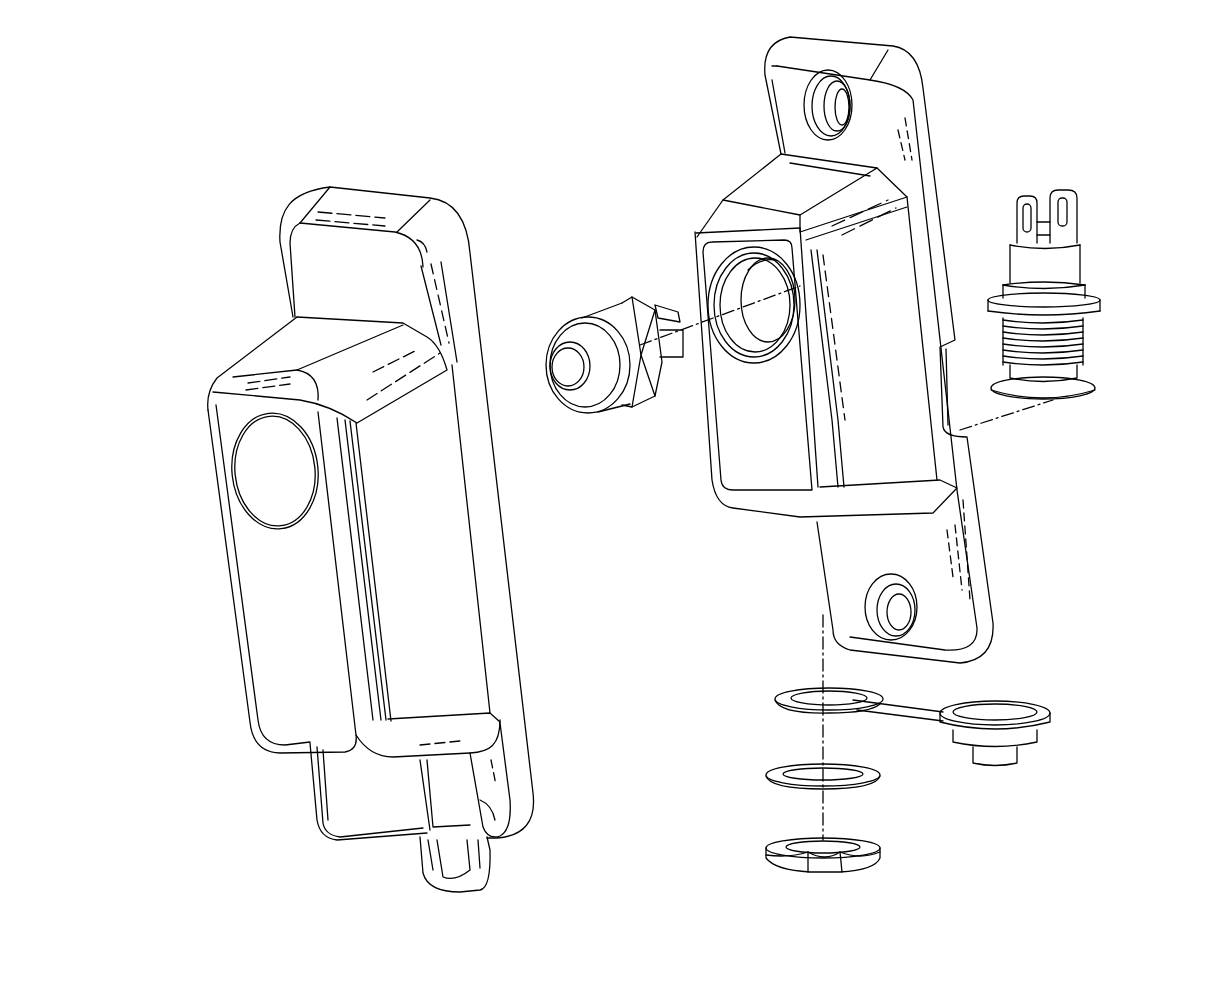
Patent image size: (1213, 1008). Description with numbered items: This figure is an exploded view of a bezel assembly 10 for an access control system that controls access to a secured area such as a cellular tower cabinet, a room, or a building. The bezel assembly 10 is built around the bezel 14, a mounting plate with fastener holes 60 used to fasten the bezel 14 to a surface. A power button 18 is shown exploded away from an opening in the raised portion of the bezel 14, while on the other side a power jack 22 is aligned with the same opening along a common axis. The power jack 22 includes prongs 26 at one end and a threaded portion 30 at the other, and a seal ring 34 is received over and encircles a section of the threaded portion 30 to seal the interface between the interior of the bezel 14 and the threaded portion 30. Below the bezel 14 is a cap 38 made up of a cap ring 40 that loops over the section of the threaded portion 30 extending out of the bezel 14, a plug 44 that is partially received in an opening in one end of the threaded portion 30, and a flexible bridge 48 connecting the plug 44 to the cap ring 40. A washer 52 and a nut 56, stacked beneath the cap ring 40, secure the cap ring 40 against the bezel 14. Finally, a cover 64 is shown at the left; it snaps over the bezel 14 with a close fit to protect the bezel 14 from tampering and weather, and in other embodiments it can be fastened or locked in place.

The bezel assembly 10 is at (186, 99).
The bezel 14 is at (732, 190).
The power button 18 is at (630, 407).
The power jack 22 is at (1124, 293).
The prongs 26 is at (1073, 220).
The threaded portion 30 is at (1085, 343).
The seal ring 34 is at (1087, 397).
The cap 38 is at (910, 742).
The cap ring 40 is at (777, 702).
The plug 44 is at (1017, 760).
The flexible bridge 48 is at (927, 703).
The washer 52 is at (770, 773).
The nut 56 is at (787, 867).
The fastener holes 60 is at (827, 80).
The cover 64 is at (250, 348).